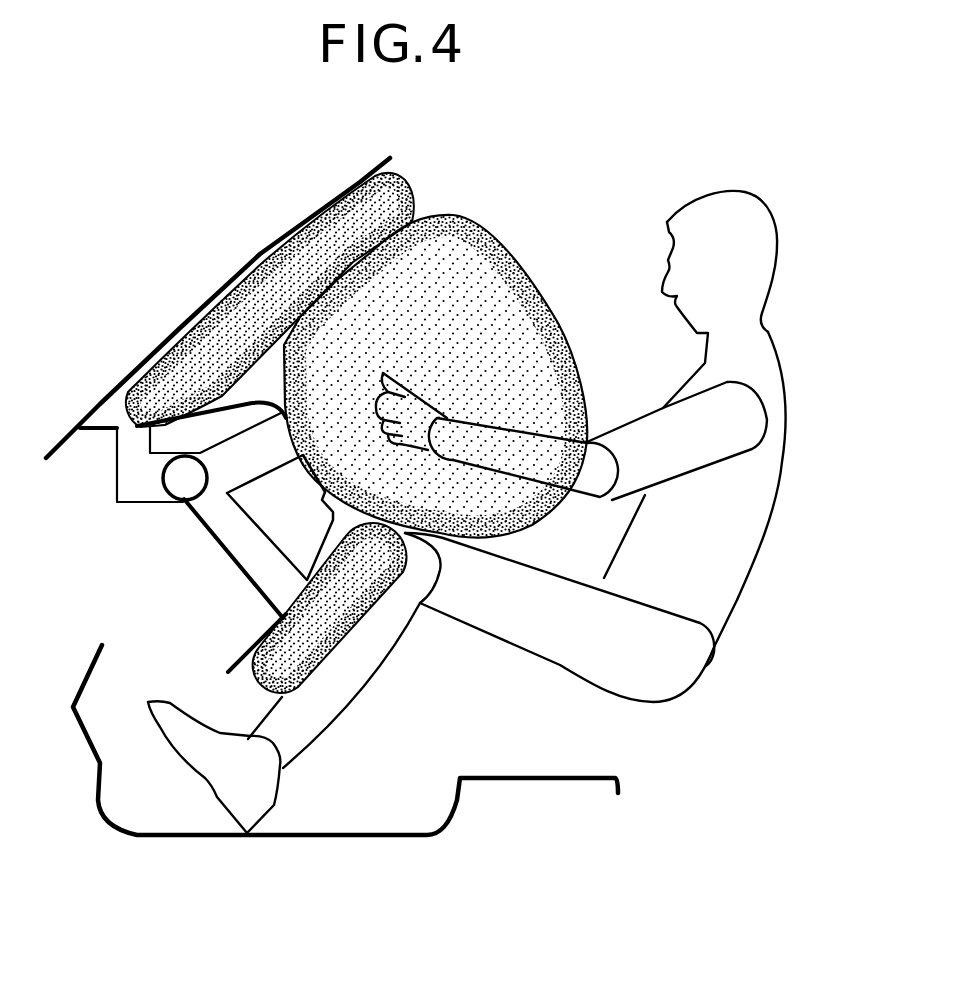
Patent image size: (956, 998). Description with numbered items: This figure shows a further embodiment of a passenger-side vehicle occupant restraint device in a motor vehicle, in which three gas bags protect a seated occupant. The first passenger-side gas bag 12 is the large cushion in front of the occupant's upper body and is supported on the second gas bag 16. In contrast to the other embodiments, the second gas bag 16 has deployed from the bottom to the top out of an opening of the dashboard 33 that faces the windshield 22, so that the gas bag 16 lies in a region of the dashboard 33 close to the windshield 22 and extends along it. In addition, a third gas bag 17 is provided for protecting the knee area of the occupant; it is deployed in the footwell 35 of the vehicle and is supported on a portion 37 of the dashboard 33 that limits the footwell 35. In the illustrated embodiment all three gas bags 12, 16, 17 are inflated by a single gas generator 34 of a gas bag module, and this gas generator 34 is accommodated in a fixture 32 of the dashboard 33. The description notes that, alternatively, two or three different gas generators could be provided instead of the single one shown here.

The first passenger-side gas bag 12 is at (497, 277).
The second gas bag 16 is at (402, 197).
The third gas bag 17 is at (275, 650).
The windshield 22 is at (253, 258).
The fixture 32 is at (130, 482).
The dashboard 33 is at (304, 529).
The gas generator 34 is at (181, 486).
The footwell 35 is at (237, 697).
The portion of the dashboard 37 is at (266, 633).